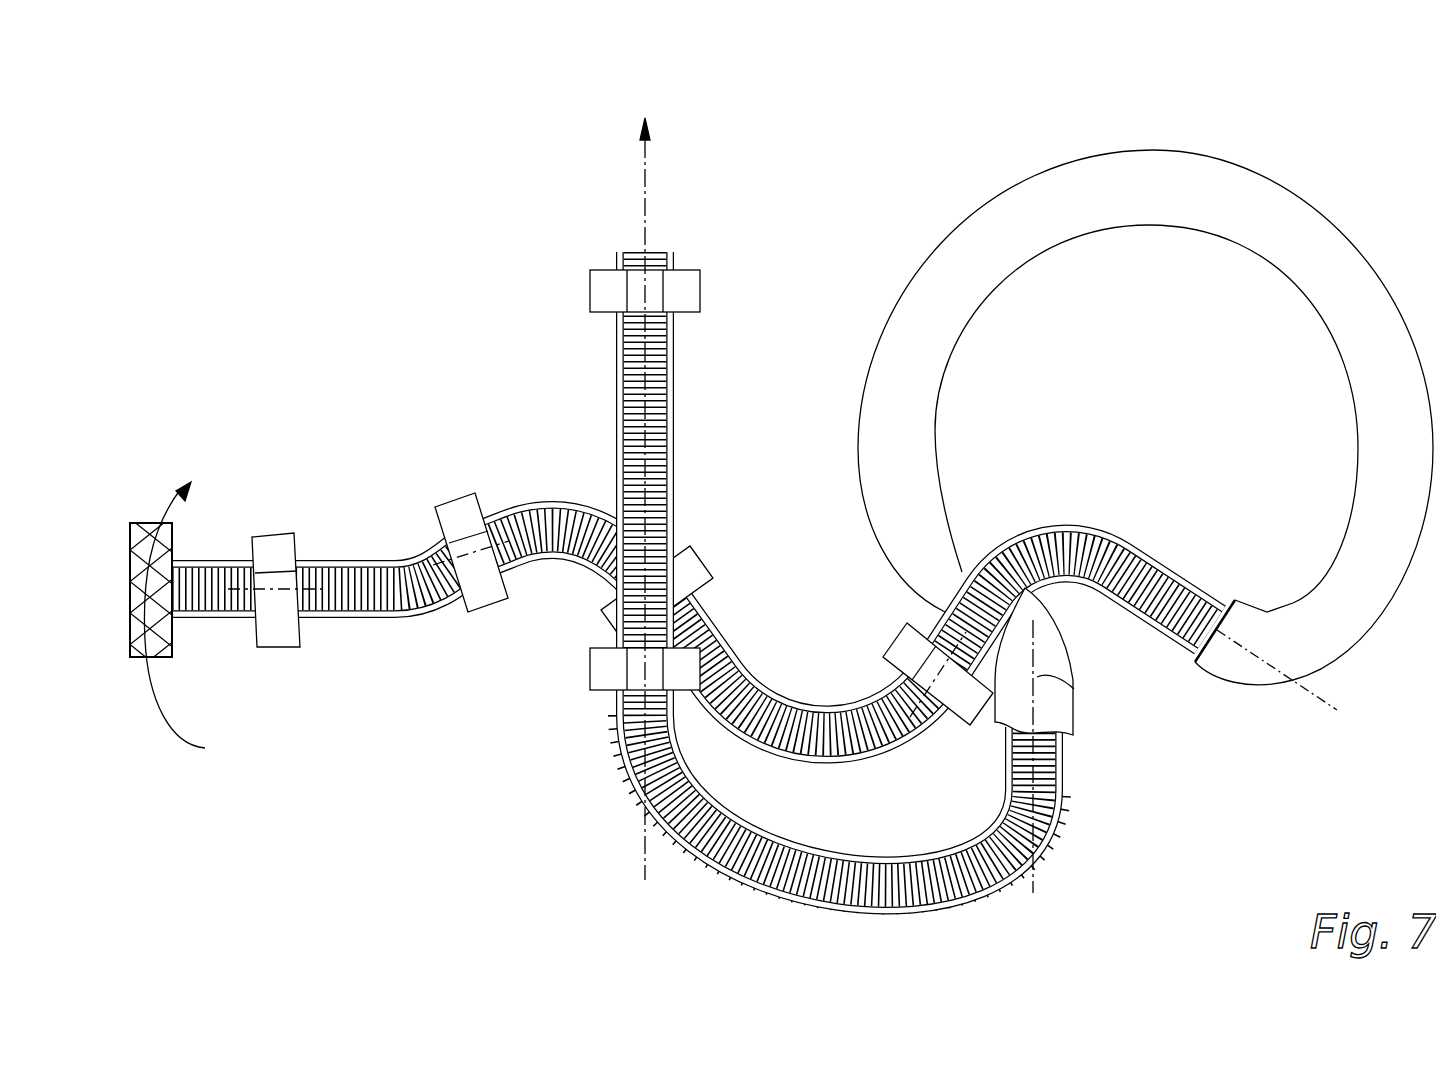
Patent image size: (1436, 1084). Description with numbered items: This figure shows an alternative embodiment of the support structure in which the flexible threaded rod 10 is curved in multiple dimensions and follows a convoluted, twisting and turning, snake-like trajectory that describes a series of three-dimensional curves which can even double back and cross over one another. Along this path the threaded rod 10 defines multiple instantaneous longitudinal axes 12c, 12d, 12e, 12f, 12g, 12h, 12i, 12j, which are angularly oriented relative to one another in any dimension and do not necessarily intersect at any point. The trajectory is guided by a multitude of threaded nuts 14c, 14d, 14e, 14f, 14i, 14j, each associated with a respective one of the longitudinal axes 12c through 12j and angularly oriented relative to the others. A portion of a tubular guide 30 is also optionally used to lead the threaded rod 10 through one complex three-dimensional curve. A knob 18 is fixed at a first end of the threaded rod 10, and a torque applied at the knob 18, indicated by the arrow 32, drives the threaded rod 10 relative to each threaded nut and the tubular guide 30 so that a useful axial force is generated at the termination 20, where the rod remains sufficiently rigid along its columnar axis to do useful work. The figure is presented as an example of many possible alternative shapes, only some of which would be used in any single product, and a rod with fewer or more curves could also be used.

The threaded rod 10 is at (754, 517).
The longitudinal axis 12c is at (272, 590).
The longitudinal axis 12d is at (468, 560).
The longitudinal axis 12e is at (650, 588).
The longitudinal axis 12f is at (940, 679).
The longitudinal axis 12g is at (1250, 648).
The longitudinal axis 12h is at (1074, 688).
The longitudinal axis 12i is at (645, 852).
The longitudinal axis 12j is at (648, 162).
The threaded nut 14c is at (263, 536).
The threaded nut 14d is at (453, 505).
The threaded nut 14e is at (702, 553).
The threaded nut 14f is at (897, 640).
The threaded nut 14i is at (590, 668).
The threaded nut 14j is at (702, 290).
The knob 18 is at (132, 552).
The termination 20 is at (620, 253).
The tubular guide 30 is at (1130, 148).
The rotation arrow 32 is at (179, 632).